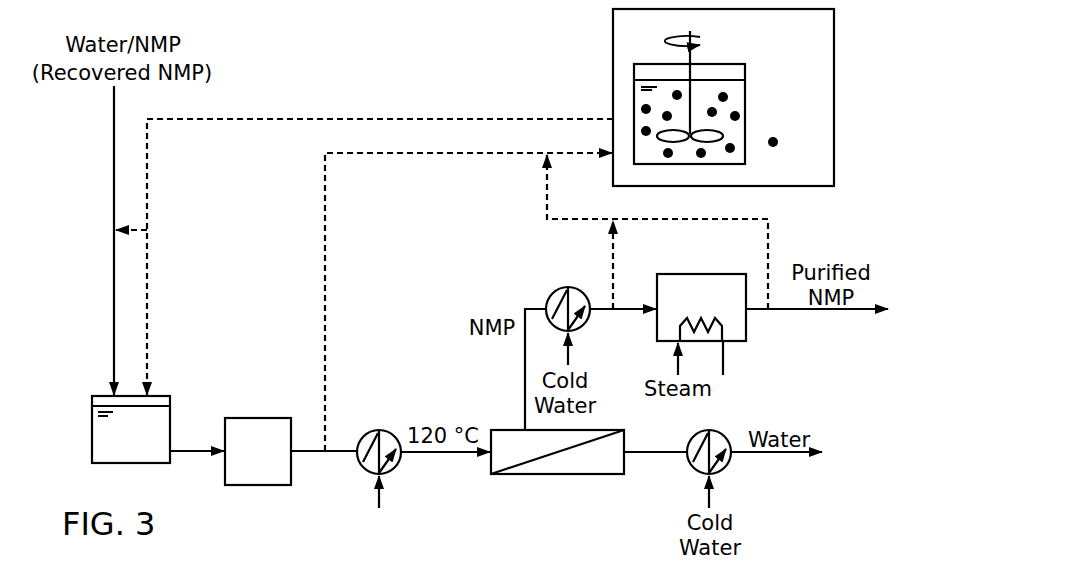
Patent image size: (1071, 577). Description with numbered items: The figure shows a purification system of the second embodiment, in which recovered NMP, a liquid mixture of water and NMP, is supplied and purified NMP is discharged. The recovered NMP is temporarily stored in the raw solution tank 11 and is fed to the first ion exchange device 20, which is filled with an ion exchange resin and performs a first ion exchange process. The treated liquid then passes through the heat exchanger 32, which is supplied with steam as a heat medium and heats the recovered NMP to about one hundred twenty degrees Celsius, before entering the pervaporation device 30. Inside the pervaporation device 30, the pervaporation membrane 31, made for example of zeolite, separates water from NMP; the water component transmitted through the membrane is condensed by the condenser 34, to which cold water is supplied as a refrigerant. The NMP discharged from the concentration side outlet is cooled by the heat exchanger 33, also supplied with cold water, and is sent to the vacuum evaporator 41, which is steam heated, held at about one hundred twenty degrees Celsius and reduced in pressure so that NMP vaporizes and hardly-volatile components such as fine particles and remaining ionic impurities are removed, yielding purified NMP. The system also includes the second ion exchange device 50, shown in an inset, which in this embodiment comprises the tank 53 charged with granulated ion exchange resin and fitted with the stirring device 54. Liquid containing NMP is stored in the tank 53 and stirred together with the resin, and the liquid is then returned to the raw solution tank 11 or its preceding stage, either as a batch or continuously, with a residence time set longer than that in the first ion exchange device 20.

The raw solution tank 11 is at (167, 398).
The first ion exchange device 20 is at (273, 420).
The pervaporation device 30 is at (563, 453).
The pervaporation membrane 31 is at (540, 458).
The heat exchanger 32 is at (384, 432).
The heat exchanger 33 is at (555, 290).
The condenser 34 is at (723, 440).
The vacuum evaporator 41 is at (746, 326).
The second ion exchange device 50 is at (698, 97).
The tank 53 is at (740, 93).
The stirring device 54 is at (692, 57).